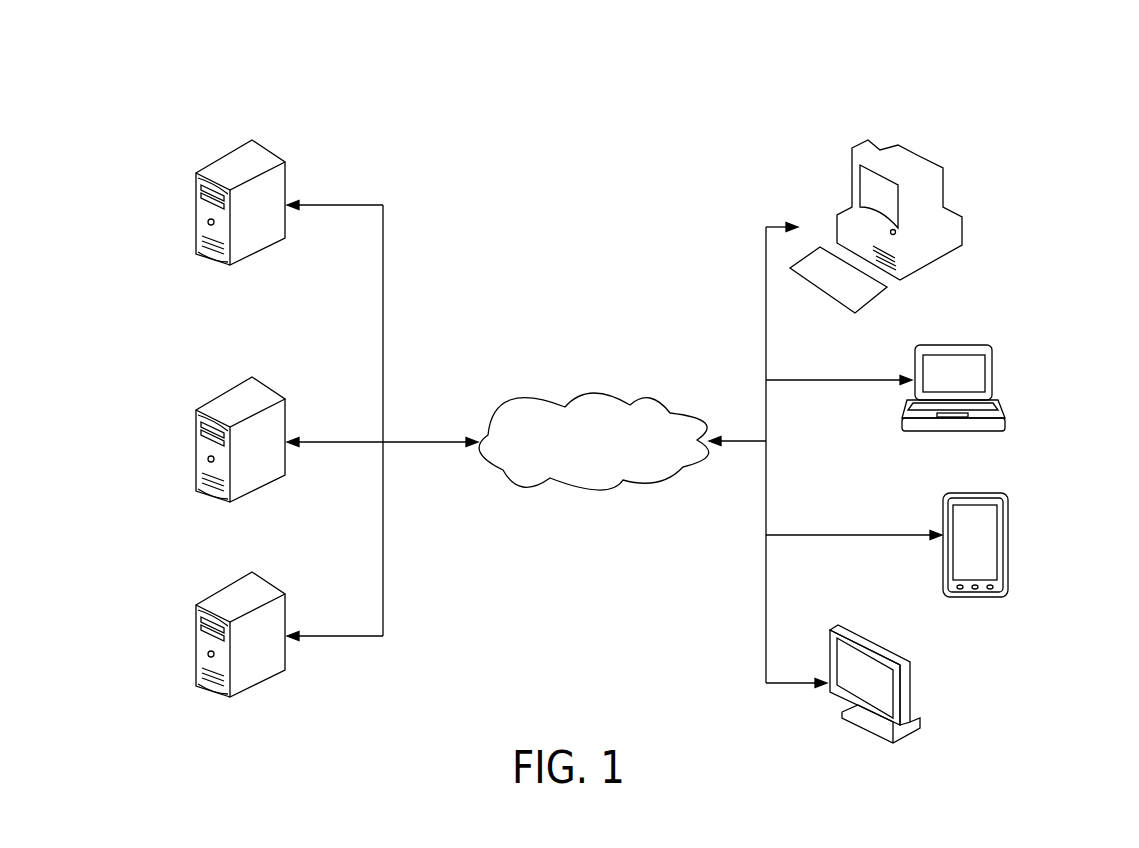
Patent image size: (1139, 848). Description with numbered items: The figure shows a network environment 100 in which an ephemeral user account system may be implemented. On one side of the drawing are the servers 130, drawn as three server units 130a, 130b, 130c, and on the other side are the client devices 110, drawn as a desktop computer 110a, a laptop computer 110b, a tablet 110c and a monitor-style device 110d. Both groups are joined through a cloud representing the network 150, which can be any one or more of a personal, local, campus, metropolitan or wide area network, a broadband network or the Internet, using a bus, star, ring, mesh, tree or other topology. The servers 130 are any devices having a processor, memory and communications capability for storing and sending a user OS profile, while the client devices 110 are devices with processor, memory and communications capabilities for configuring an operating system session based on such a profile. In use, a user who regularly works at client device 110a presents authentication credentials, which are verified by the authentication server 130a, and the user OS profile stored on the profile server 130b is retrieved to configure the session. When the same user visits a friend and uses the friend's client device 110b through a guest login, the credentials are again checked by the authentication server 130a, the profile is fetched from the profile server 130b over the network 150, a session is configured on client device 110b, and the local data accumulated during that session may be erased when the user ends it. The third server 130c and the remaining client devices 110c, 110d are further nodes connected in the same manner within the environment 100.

The network environment 100 is at (548, 69).
The client devices 110 is at (965, 88).
The client device 110a is at (964, 220).
The friend's client device 110b is at (997, 386).
The client device 110c is at (1010, 531).
The client device 110d is at (910, 682).
The servers 130 is at (283, 85).
The authentication server 130a is at (195, 203).
The profile server 130b is at (195, 447).
The server 130c is at (195, 635).
The network 150 is at (560, 397).